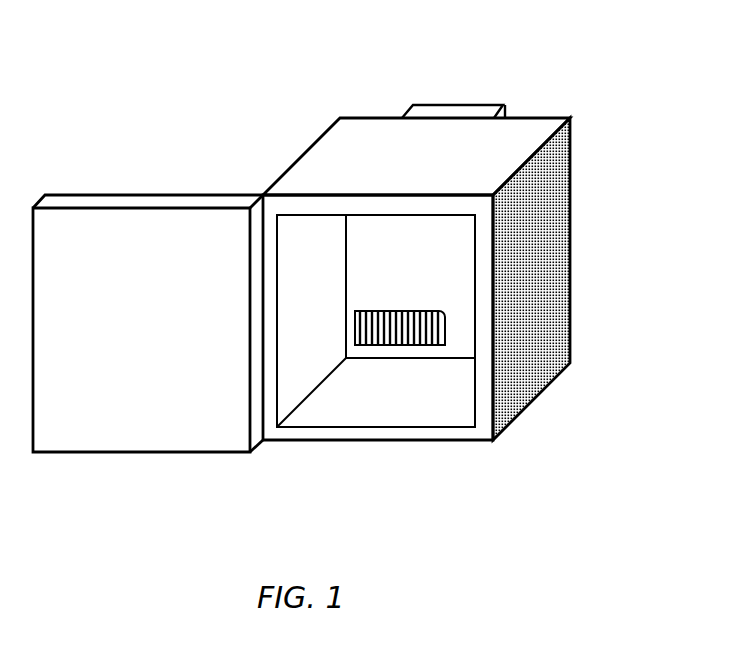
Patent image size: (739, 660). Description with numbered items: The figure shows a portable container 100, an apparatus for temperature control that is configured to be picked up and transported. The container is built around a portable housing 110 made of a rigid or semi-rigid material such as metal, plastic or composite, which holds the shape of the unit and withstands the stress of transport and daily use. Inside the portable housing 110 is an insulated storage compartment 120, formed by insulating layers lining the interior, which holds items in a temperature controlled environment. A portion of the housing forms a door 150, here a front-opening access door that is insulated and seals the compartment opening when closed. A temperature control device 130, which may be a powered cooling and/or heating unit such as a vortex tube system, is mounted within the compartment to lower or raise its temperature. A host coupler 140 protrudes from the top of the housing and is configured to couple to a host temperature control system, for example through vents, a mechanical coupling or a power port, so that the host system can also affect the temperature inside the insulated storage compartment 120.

The portable container 100 is at (255, 75).
The portable housing 110 is at (558, 198).
The insulated storage compartment 120 is at (410, 400).
The temperature control device 130 is at (400, 310).
The host coupler 140 is at (467, 105).
The door 150 is at (93, 452).